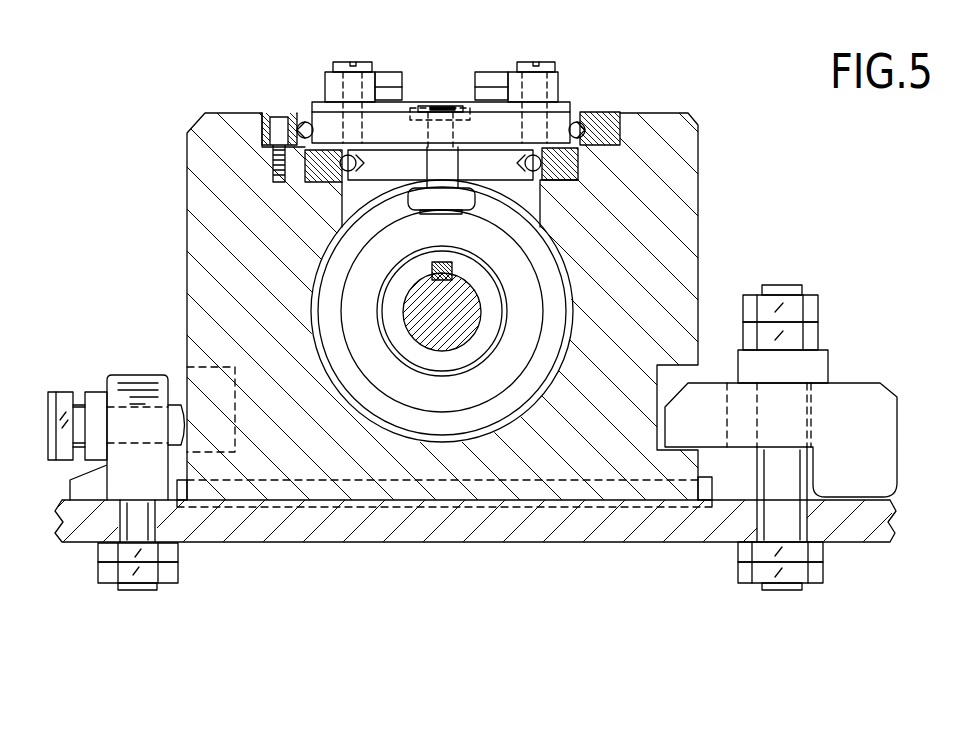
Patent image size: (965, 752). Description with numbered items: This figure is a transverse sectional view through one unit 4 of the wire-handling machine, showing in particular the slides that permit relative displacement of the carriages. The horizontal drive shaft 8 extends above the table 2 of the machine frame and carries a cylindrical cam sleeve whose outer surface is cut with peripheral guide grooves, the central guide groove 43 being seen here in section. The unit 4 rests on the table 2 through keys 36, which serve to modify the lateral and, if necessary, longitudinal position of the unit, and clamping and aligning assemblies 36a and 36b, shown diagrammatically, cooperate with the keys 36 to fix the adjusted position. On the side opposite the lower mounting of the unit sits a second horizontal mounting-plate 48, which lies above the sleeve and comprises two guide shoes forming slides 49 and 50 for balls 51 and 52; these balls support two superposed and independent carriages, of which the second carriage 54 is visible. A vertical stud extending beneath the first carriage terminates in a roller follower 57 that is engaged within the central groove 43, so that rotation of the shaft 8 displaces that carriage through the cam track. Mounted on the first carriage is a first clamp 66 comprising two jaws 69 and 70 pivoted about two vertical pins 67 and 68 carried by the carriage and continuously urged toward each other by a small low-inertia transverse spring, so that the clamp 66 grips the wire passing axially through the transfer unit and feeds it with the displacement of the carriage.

The table 2 is at (883, 507).
The unit 4 is at (708, 217).
The drive shaft 8 is at (468, 330).
The keys 36 is at (712, 477).
The clamping and aligning assembly 36a is at (752, 288).
The clamping and aligning assembly 36b is at (99, 374).
The central guide groove 43 is at (556, 340).
The second horizontal mounting-plate 48 is at (266, 111).
The slide 49 is at (610, 130).
The slide 50 is at (578, 152).
The balls 51 is at (585, 128).
The balls 52 is at (553, 170).
The second carriage 54 is at (510, 172).
The roller follower 57 is at (410, 196).
The first clamp 66 is at (468, 81).
The vertical pin 67 is at (345, 62).
The vertical pin 68 is at (528, 62).
The jaw 69 is at (327, 90).
The jaw 70 is at (560, 92).